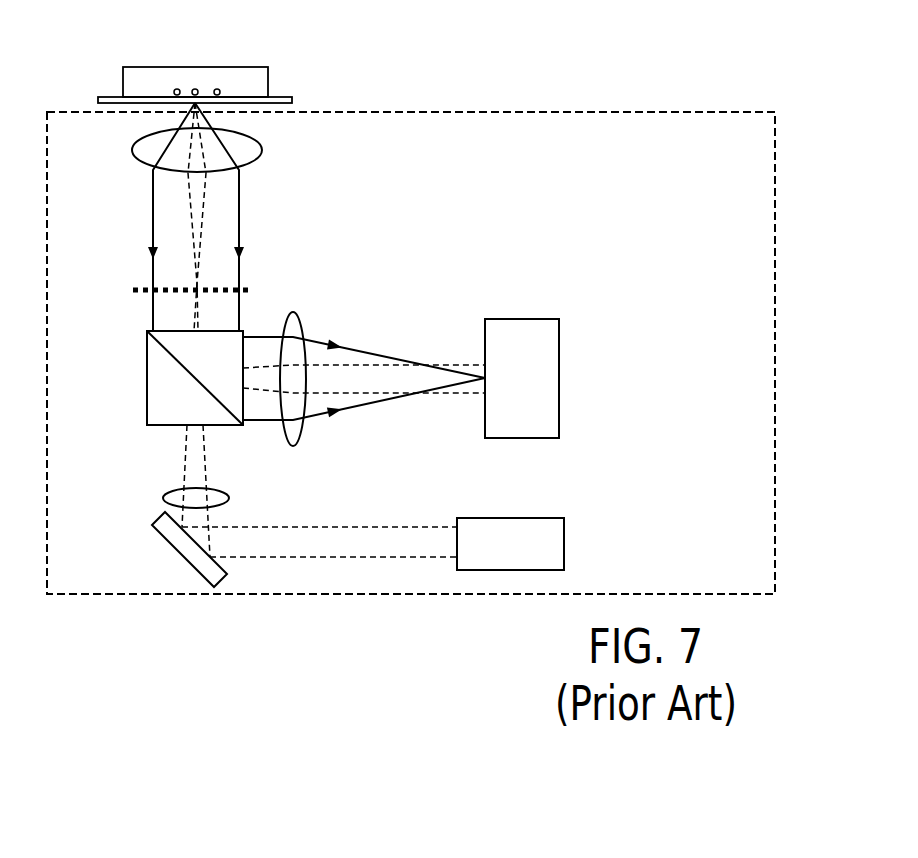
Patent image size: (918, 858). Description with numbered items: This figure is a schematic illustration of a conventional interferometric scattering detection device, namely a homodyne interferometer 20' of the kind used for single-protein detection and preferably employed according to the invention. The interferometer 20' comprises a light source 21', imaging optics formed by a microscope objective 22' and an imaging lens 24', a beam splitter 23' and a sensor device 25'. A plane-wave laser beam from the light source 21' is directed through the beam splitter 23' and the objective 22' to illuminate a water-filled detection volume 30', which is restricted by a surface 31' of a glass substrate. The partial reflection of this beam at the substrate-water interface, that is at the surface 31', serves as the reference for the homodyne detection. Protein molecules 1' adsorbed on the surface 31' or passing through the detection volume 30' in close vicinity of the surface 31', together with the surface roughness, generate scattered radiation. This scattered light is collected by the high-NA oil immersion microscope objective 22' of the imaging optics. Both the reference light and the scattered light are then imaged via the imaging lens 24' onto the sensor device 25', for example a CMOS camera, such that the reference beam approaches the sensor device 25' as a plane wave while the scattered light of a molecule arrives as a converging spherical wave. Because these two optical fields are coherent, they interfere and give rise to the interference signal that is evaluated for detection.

The protein molecules 1' is at (224, 50).
The homodyne interferometer 20' is at (411, 353).
The light source 21' is at (543, 521).
The microscope objective 22' is at (156, 173).
The beam splitter 23' is at (147, 396).
The imaging lens 24' is at (337, 357).
The sensor device 25' is at (558, 354).
The detection volume 30' is at (228, 59).
The surface of glass substrate 31' is at (178, 69).